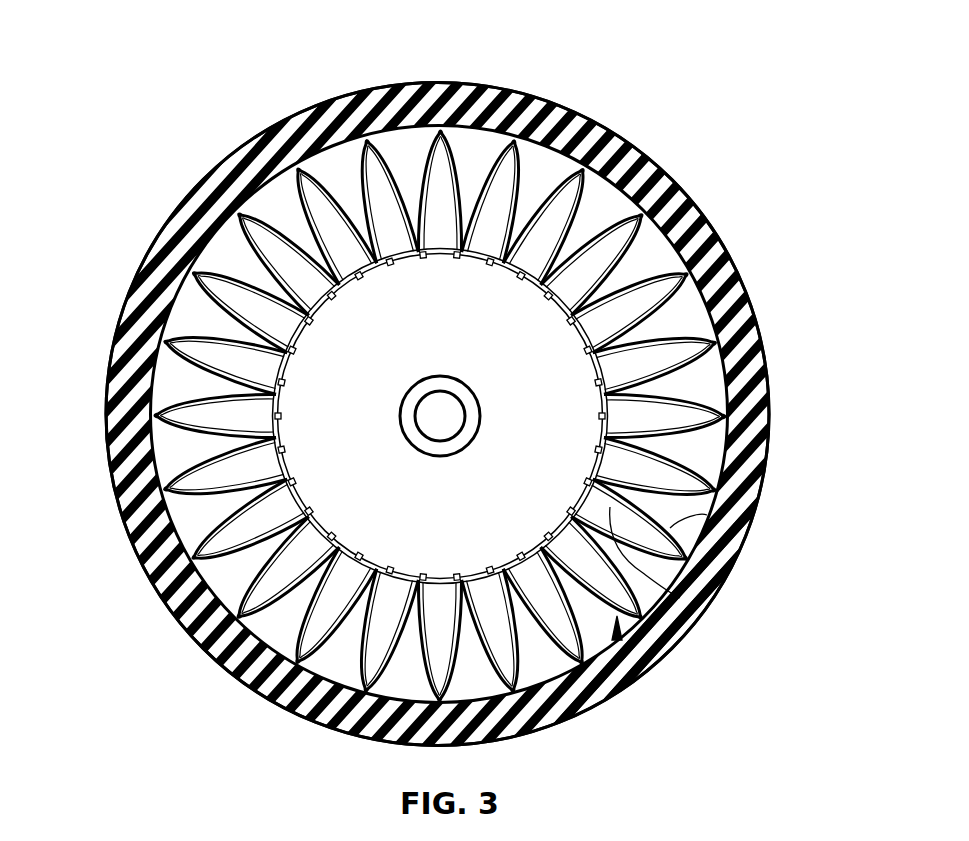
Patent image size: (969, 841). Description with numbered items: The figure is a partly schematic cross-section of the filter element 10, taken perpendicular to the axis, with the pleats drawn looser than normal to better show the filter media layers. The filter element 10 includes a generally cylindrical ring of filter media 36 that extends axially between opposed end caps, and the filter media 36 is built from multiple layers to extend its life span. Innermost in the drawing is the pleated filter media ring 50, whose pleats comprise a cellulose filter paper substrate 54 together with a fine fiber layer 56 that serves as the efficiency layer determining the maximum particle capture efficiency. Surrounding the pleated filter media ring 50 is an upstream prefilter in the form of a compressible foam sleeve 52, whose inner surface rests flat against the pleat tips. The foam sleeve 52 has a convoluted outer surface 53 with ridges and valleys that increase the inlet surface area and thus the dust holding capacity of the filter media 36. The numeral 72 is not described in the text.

The filter element 10 is at (155, 45).
The filter media 36 is at (785, 392).
The pleated filter media ring 50 is at (626, 686).
The foam sleeve 52 is at (757, 452).
The convoluted outer surface 53 is at (750, 286).
The substrate 54 is at (693, 600).
The fine fiber layer 56 is at (707, 515).
The inner surface 72 is at (633, 190).